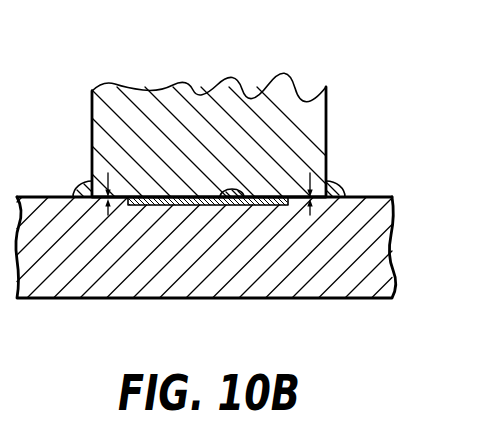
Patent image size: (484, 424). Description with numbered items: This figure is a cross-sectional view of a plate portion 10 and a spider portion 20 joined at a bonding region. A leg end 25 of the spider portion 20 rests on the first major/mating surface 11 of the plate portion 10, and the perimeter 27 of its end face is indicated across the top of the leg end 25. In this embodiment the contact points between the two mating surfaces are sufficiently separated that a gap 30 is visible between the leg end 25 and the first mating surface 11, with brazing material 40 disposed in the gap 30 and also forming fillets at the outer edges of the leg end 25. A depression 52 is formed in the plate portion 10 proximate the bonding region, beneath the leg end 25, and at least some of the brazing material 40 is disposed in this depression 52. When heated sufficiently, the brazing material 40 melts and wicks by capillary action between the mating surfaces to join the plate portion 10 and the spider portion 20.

The plate portion 10 is at (375, 247).
The first major/mating surface 11 is at (364, 196).
The spider portion 20 is at (258, 135).
The leg end 25 is at (310, 133).
The perimeter 27 is at (326, 77).
The gap 30 is at (108, 178).
The brazing material 40 is at (77, 188).
The depression 52 is at (243, 198).